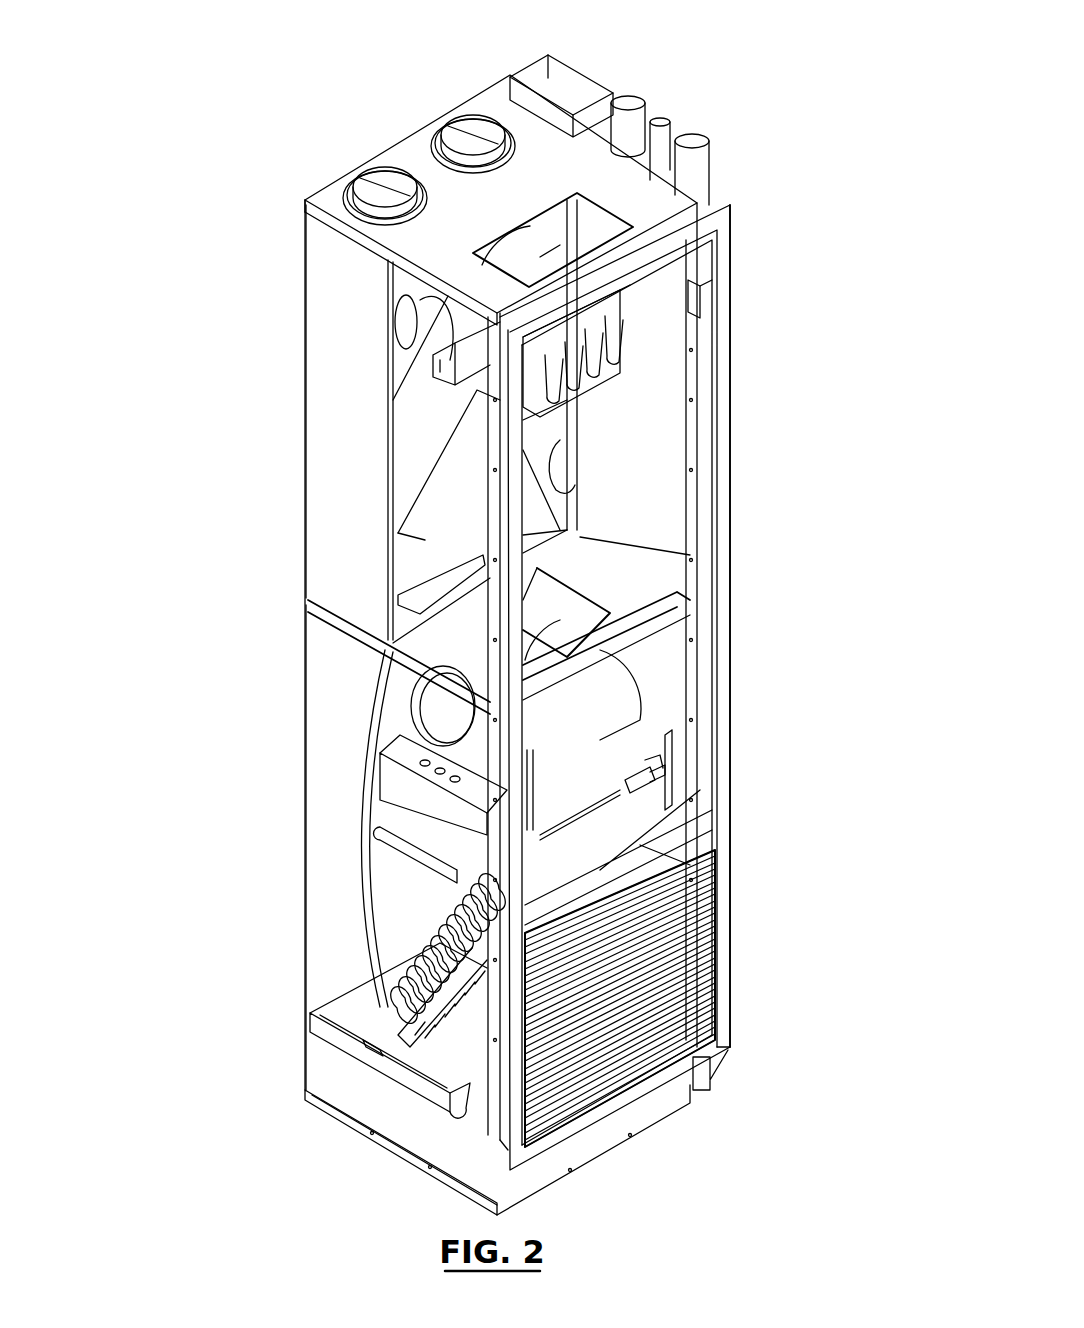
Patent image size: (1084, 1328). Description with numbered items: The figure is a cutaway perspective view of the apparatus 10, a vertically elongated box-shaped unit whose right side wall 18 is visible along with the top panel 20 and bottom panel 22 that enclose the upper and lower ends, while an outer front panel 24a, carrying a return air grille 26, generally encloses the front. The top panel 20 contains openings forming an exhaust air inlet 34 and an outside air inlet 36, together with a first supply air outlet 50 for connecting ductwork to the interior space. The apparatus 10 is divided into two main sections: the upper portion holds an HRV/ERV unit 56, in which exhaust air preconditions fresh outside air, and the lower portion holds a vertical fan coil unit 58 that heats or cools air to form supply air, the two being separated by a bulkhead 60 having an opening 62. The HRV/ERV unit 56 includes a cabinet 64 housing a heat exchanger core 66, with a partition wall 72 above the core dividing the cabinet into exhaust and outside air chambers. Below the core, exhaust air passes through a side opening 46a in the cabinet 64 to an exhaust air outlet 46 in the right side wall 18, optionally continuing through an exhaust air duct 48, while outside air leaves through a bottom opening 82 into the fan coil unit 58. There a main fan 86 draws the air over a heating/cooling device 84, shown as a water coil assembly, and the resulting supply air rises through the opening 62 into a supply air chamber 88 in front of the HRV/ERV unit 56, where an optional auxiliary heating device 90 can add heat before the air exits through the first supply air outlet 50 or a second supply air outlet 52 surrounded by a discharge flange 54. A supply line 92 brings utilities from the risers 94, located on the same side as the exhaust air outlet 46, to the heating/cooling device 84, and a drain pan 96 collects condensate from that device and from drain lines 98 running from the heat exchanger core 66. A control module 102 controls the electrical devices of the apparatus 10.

The apparatus 10 is at (252, 138).
The right side wall 18 is at (668, 455).
The top panel 20 is at (325, 195).
The bottom panel 22 is at (362, 1100).
The outer front panel 24a is at (725, 990).
The return air grille 26 is at (697, 950).
The exhaust air inlet 34 is at (399, 180).
The outside air inlet 36 is at (473, 136).
The exhaust air outlet 46 is at (546, 477).
The side opening 46a is at (567, 465).
The exhaust air duct 48 is at (535, 68).
The first supply air outlet 50 is at (588, 228).
The second supply air outlet 52 is at (643, 311).
The discharge flange 54 is at (688, 290).
The HRV/ERV unit 56 is at (292, 598).
The vertical fan coil (VFC) unit 58 is at (292, 1095).
The bulkhead 60 is at (663, 600).
The opening 62 is at (572, 612).
The cabinet 64 is at (315, 521).
The heat exchanger core 66 is at (410, 460).
The partition wall 72 is at (510, 288).
The bottom opening 82 is at (421, 578).
The heating/cooling device 84 is at (447, 940).
The main fan 86 is at (602, 677).
The supply air chamber 88 is at (658, 500).
The auxiliary heating device 90 is at (587, 358).
The supply line 92 is at (603, 802).
The risers 94 is at (617, 82).
The drain pan 96 is at (407, 1083).
The drain lines 98 is at (372, 727).
The control module 102 is at (403, 790).